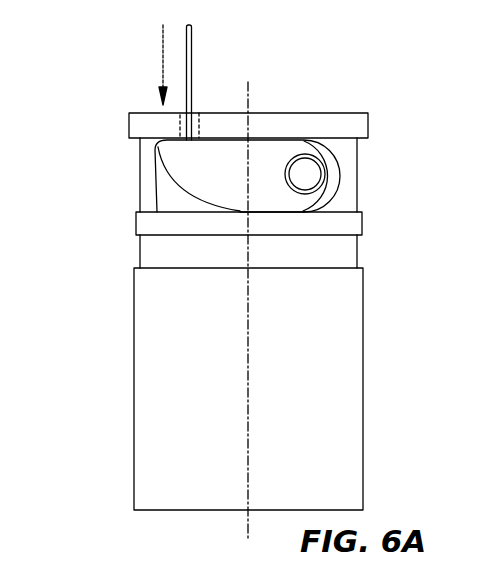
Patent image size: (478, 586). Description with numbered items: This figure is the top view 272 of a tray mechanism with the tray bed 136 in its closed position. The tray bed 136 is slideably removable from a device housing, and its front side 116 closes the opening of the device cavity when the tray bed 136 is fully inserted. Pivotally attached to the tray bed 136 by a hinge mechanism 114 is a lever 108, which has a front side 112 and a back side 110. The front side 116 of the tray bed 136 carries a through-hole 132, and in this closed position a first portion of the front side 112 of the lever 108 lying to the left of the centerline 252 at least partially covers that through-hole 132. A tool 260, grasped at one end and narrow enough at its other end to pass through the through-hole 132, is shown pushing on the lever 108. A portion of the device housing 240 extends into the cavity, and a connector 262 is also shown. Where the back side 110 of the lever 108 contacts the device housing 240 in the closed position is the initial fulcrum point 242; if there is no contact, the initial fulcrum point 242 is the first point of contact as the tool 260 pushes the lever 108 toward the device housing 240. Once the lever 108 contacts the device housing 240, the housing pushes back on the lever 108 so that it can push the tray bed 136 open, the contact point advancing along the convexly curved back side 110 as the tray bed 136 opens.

The lever 108 is at (212, 185).
The back side of lever 110 is at (155, 186).
The front side of lever 112 is at (288, 138).
The hinge mechanism 114 is at (310, 180).
The front side of tray bed 116 is at (129, 129).
The through-hole 132 is at (178, 125).
The tray bed 136 is at (342, 250).
The device housing 240 is at (136, 224).
The initial fulcrum point 242 is at (267, 210).
The centerline 252 is at (247, 95).
The tool 260 is at (192, 47).
The connector 262 is at (292, 400).
The top view (closed position) 272 is at (93, 459).